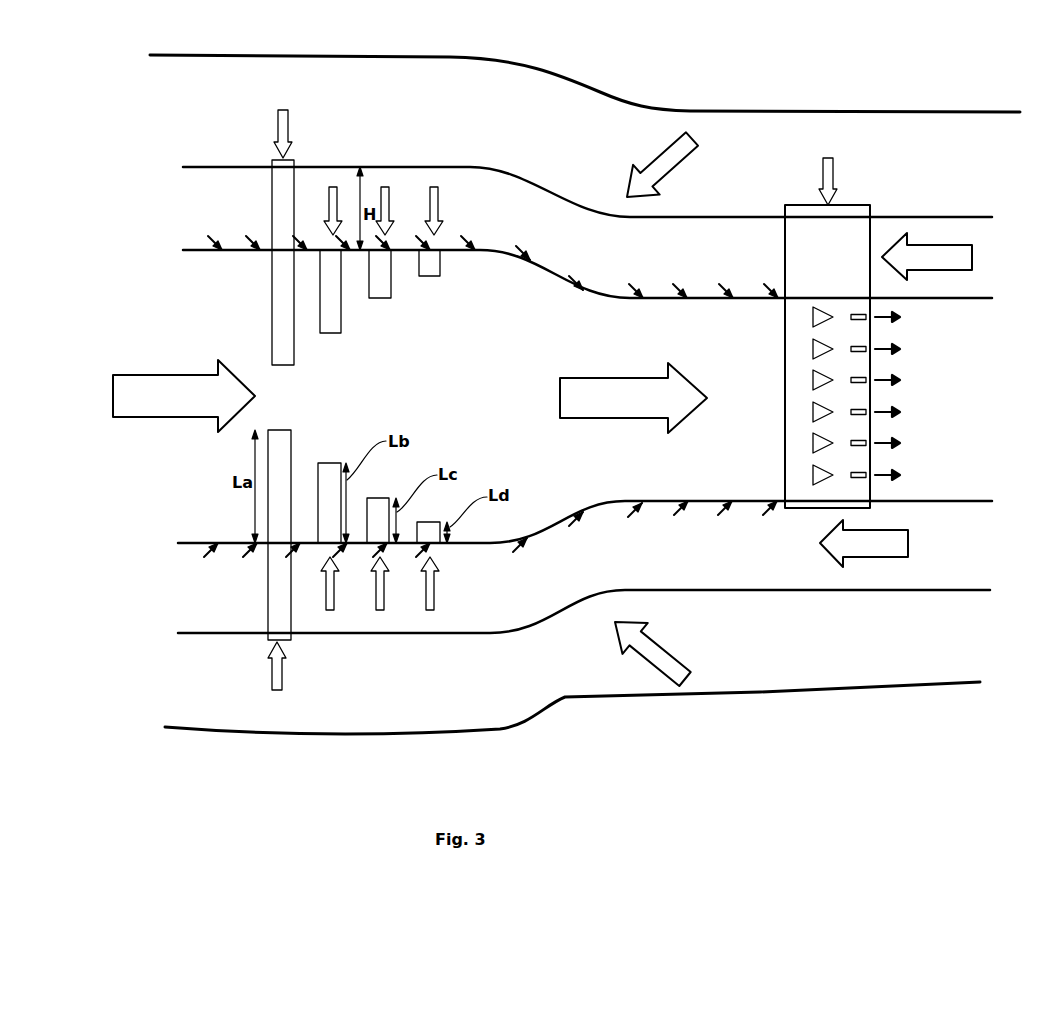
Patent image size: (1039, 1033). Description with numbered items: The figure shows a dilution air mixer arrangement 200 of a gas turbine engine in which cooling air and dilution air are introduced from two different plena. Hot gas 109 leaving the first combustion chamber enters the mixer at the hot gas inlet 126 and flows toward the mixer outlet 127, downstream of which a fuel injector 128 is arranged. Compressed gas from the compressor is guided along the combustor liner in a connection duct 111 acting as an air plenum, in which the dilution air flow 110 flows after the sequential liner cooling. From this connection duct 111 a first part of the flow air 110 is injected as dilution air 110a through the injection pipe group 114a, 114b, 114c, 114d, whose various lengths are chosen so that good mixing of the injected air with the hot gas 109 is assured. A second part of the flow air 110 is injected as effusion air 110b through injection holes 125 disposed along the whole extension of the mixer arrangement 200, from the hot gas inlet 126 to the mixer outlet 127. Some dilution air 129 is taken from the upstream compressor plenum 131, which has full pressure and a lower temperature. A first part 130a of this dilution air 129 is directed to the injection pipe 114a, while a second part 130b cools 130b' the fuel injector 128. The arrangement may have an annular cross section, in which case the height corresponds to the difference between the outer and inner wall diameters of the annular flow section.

The hot gas 109 is at (167, 383).
The dilution air flow 110 is at (933, 243).
The dilution air 110a is at (437, 214).
The effusion air 110b is at (667, 287).
The connection duct 111 is at (455, 192).
The injection pipe 114a is at (295, 358).
The injection pipe 114b is at (341, 322).
The injection pipe 114c is at (391, 288).
The injection pipe 114d is at (440, 267).
The injection holes 125 is at (580, 293).
The hot gas inlet 126 is at (180, 449).
The mixer outlet 127 is at (630, 464).
The fuel injector 128 is at (876, 332).
The dilution air 129 is at (690, 145).
The first part of dilution air 130a is at (275, 132).
The second part of dilution air 130b is at (857, 332).
The cooling of fuel injector 130b' is at (929, 403).
The upstream compressor plenum 131 is at (808, 128).
The dilution air mixer arrangement 200 is at (552, 168).